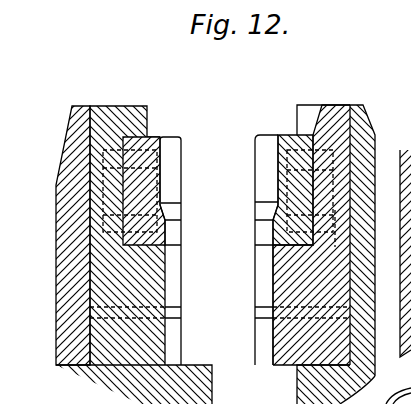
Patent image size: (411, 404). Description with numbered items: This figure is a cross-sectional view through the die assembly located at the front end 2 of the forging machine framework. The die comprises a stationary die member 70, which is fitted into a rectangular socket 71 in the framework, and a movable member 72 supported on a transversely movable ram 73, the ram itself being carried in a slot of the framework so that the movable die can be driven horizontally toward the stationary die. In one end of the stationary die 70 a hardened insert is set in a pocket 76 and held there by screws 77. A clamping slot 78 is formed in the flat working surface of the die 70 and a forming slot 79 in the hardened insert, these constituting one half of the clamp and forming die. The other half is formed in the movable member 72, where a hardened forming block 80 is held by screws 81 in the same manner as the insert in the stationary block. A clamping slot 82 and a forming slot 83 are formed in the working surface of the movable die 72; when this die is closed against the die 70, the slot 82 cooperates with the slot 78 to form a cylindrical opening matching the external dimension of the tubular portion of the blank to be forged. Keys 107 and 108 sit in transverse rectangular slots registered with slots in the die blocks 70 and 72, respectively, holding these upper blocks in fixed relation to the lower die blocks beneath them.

The front end 2 is at (362, 148).
The stationary die member 70 is at (284, 140).
The rectangular socket 71 is at (349, 106).
The movable member 72 is at (113, 112).
The transversely movable ram 73 is at (73, 285).
The pocket 76 is at (315, 195).
The screws 77 is at (352, 220).
The clamping slot 78 is at (270, 283).
The forming slot 79 is at (278, 178).
The hardened forming block 80 is at (147, 142).
The screws 81 is at (75, 165).
The clamping slot 82 is at (177, 287).
The forming slot 83 is at (176, 184).
The key 107 is at (270, 313).
The key 108 is at (177, 321).